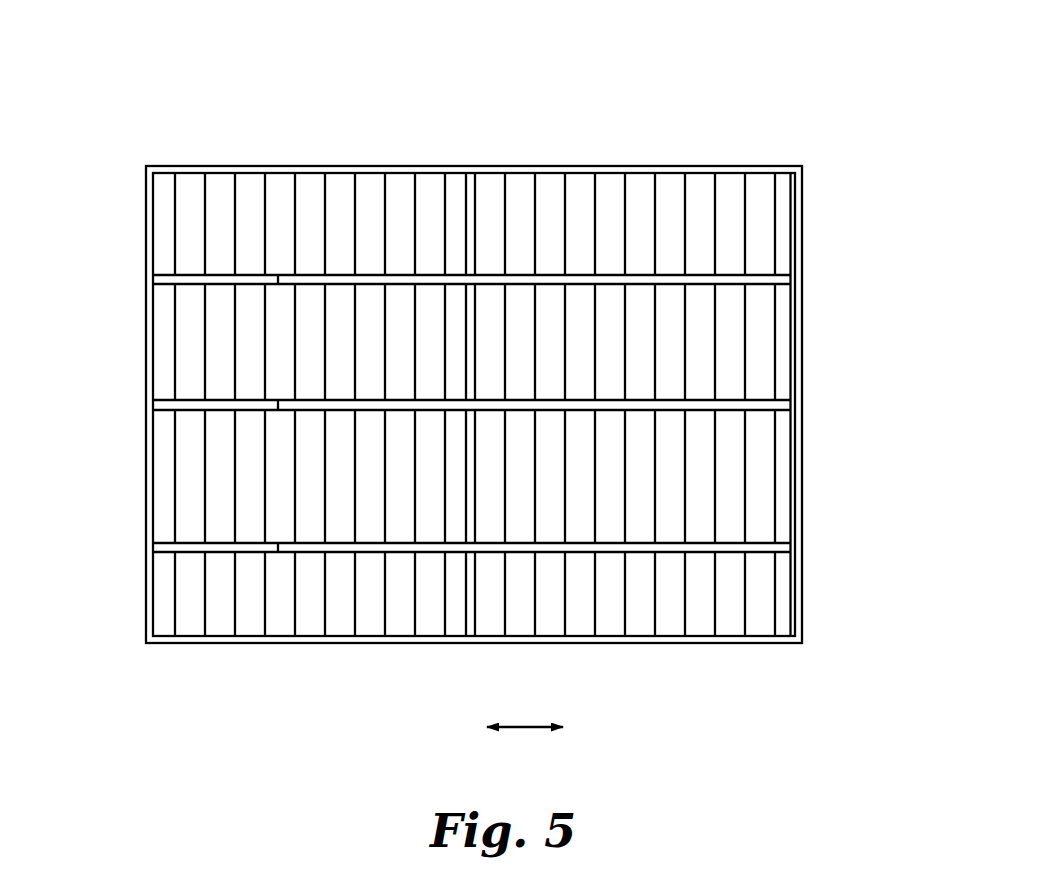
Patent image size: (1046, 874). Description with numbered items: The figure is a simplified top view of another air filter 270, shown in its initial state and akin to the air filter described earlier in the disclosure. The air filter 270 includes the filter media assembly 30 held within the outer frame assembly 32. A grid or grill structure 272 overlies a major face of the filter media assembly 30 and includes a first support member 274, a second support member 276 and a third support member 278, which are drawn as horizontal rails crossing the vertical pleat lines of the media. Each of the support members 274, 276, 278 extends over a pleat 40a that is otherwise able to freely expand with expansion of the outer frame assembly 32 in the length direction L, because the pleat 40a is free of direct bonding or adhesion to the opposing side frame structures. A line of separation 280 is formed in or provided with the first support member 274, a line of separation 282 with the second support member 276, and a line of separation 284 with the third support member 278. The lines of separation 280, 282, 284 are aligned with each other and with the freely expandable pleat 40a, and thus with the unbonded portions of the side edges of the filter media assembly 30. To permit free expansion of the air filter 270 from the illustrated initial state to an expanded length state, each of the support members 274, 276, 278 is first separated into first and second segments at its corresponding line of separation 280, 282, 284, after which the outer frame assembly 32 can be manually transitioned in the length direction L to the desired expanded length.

The air filter 270 is at (656, 88).
The filter media assembly 30 is at (337, 220).
The outer frame assembly 32 is at (804, 352).
The freely expandable pleat 40a is at (278, 221).
The grid or grill structure 272 is at (487, 275).
The first support member 274 is at (206, 278).
The second support member 276 is at (217, 411).
The third support member 278 is at (210, 546).
The line of separation 280 is at (277, 274).
The line of separation 282 is at (262, 400).
The line of separation 284 is at (280, 550).
The length direction L is at (525, 728).